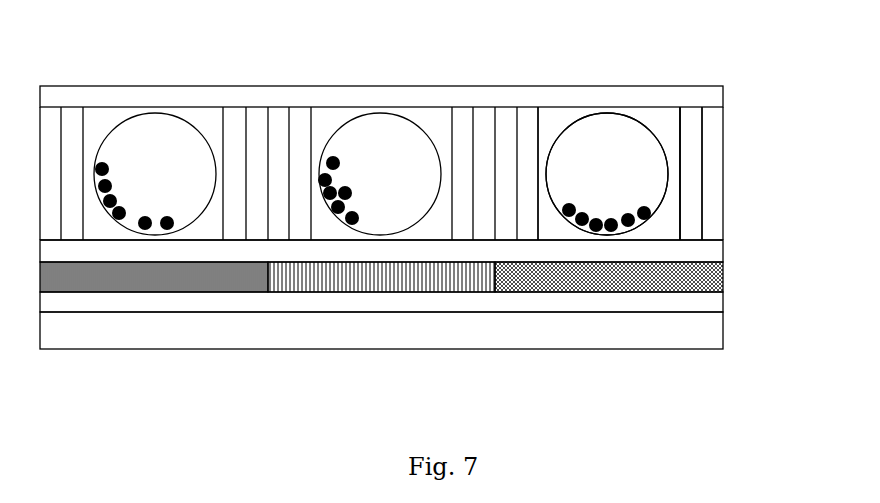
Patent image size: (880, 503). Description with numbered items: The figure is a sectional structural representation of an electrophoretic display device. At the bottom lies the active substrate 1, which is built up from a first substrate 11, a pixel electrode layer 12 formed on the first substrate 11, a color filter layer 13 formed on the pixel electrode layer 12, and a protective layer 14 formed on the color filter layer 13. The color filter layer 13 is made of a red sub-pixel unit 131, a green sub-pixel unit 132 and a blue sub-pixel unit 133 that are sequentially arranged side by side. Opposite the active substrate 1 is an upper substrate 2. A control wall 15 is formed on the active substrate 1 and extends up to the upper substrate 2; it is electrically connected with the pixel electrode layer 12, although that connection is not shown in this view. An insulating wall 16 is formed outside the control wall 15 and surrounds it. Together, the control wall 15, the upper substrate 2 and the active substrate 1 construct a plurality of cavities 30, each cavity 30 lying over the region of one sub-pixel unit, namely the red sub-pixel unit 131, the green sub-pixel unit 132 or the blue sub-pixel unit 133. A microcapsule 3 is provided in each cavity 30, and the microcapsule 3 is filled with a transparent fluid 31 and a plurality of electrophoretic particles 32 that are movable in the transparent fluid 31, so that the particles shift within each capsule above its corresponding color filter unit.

The active substrate 1 is at (423, 329).
The upper substrate 2 is at (692, 96).
The microcapsule 3 is at (669, 173).
The first substrate 11 is at (409, 330).
The pixel electrode layer 12 is at (713, 302).
The color filter layer 13 is at (381, 340).
The protective layer 14 is at (713, 253).
The control wall 15 is at (693, 151).
The insulating wall 16 is at (716, 121).
The cavity 30 is at (657, 146).
The transparent fluid 31 is at (648, 194).
The electrophoretic particles 32 is at (651, 215).
The red sub-pixel unit 131 is at (205, 281).
The green sub-pixel unit 132 is at (431, 282).
The blue sub-pixel unit 133 is at (609, 323).